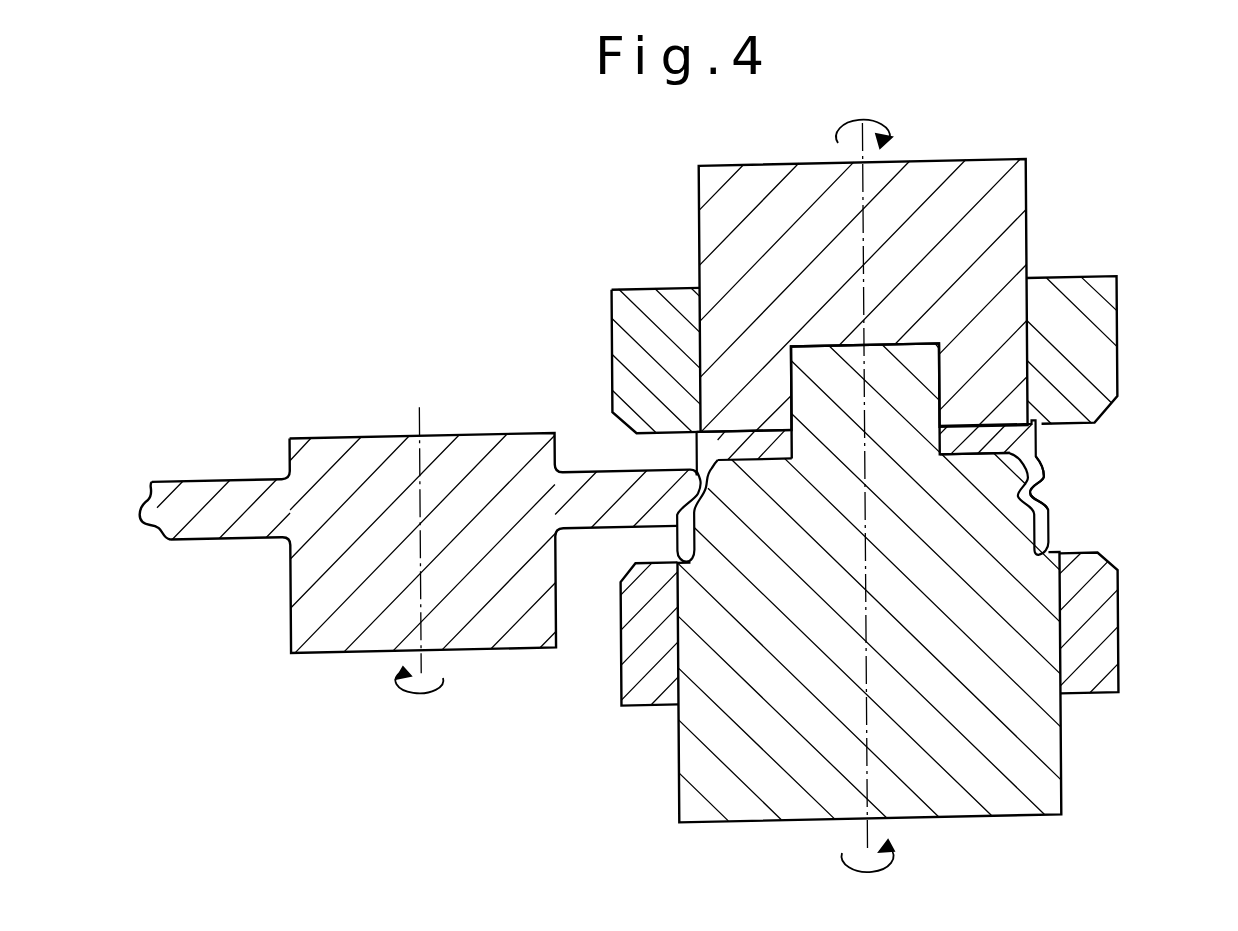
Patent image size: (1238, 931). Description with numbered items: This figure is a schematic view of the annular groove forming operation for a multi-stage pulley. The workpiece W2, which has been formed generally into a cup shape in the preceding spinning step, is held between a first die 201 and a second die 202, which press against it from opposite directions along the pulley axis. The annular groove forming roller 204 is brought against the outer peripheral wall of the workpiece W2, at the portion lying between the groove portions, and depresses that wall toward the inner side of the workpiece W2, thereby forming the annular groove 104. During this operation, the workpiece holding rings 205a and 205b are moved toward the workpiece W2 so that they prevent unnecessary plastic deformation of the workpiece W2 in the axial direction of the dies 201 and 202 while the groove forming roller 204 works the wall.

The first die 201 is at (746, 212).
The second die 202 is at (770, 740).
The annular groove forming roller 204 is at (345, 488).
The workpiece holding ring 205a is at (1097, 345).
The workpiece holding ring 205b is at (1097, 630).
The workpiece W2 is at (1028, 447).
The annular groove 104 is at (1044, 490).